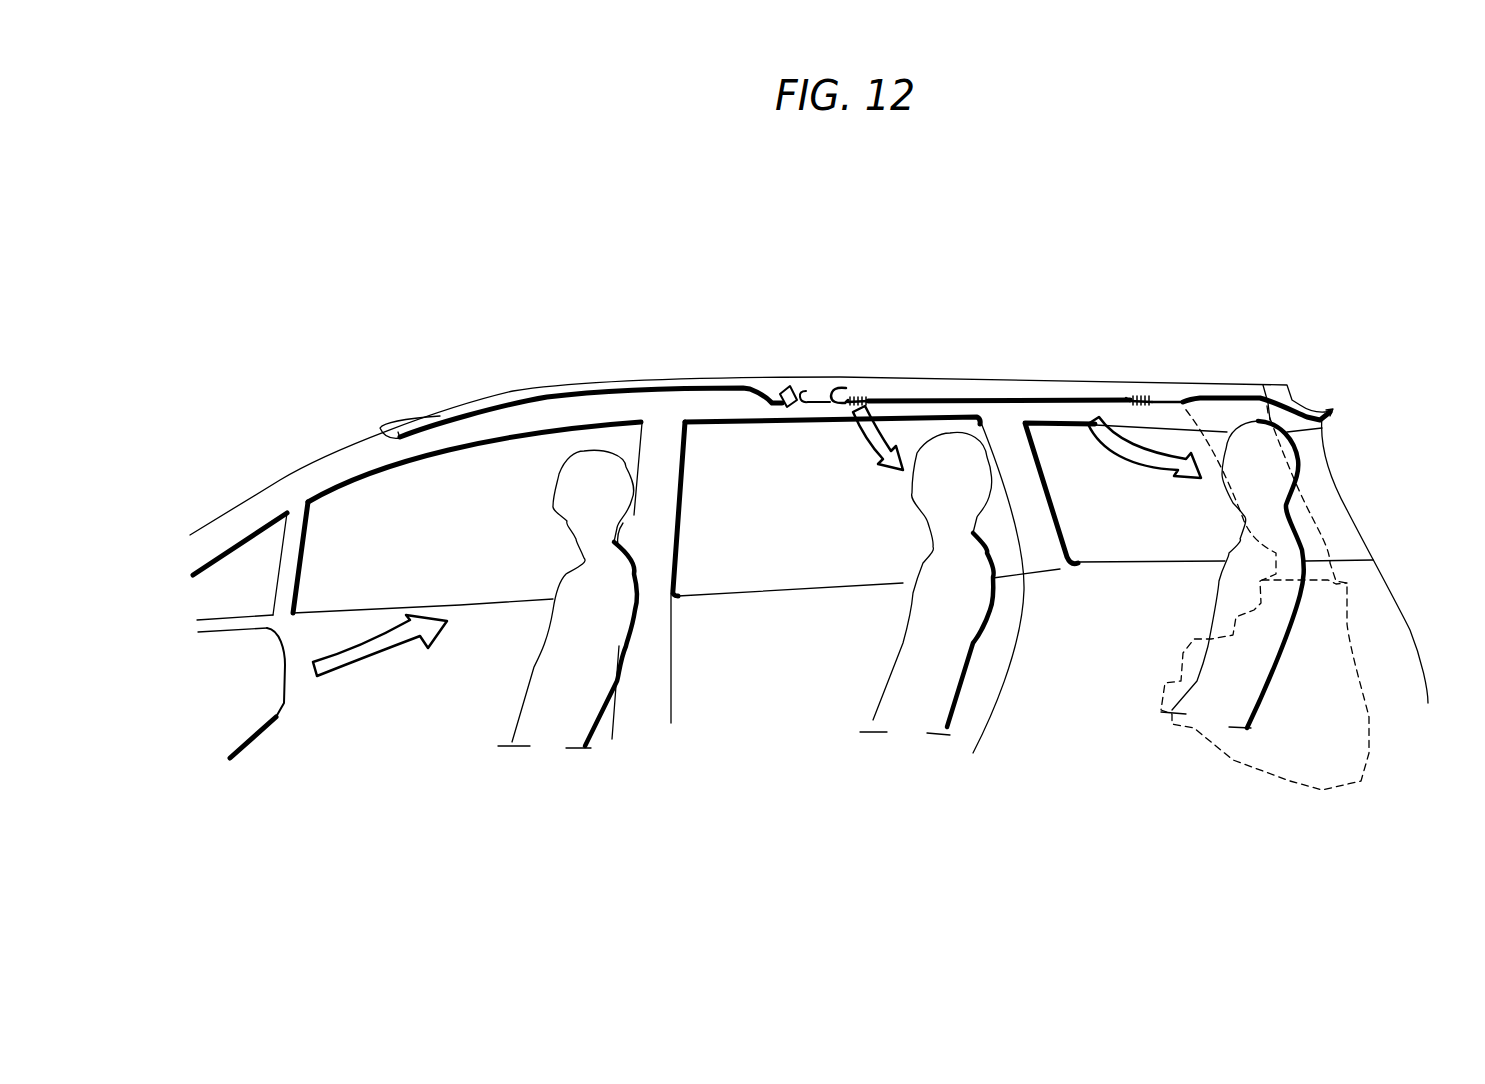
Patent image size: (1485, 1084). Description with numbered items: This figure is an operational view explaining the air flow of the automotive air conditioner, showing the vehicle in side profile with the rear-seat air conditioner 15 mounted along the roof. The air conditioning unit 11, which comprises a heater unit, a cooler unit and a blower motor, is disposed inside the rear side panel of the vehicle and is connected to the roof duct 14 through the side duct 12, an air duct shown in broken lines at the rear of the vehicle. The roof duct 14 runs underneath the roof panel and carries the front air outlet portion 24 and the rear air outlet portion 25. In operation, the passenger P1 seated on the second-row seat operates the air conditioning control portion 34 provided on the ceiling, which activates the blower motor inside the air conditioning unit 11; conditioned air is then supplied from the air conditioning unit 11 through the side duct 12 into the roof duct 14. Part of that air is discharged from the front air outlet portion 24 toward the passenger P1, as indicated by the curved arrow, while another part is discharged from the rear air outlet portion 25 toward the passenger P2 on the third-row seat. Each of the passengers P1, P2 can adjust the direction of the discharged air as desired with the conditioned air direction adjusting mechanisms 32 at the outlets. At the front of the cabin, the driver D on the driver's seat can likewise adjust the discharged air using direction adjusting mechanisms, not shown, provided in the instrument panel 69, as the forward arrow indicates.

The air conditioning unit 11 is at (1352, 627).
The side duct 12 is at (1310, 503).
The roof duct 14 is at (970, 380).
The air conditioner for rear seats 15 is at (1073, 353).
The front air outlet portion 24 is at (843, 383).
The rear air outlet portion 25 is at (1145, 387).
The conditioned air direction adjusting mechanism 32 is at (840, 408).
The air conditioning control portion 34 is at (800, 410).
The instrument panel 69 is at (282, 703).
The driver D is at (534, 664).
The passenger on second-row seat P1 is at (897, 653).
The passenger on third-row seat P2 is at (1211, 613).